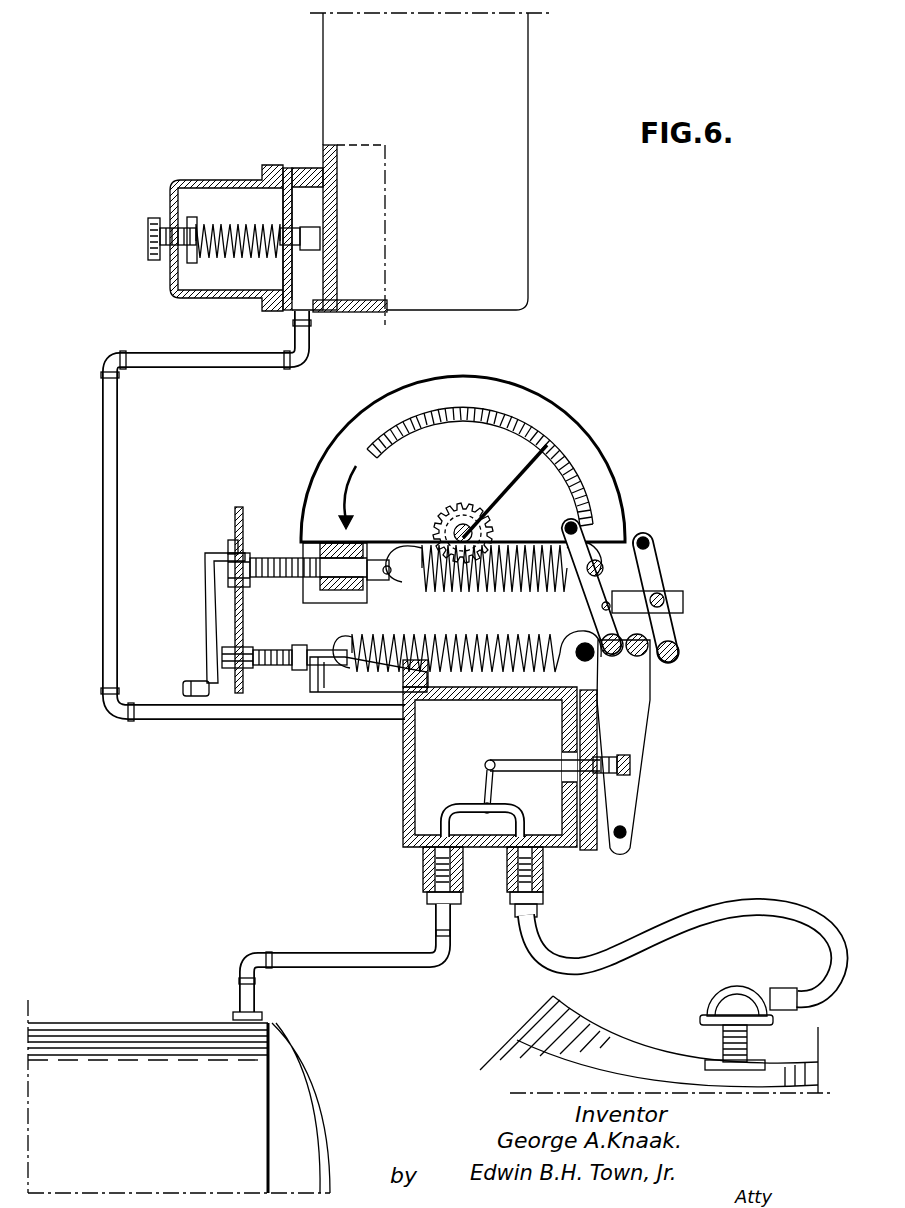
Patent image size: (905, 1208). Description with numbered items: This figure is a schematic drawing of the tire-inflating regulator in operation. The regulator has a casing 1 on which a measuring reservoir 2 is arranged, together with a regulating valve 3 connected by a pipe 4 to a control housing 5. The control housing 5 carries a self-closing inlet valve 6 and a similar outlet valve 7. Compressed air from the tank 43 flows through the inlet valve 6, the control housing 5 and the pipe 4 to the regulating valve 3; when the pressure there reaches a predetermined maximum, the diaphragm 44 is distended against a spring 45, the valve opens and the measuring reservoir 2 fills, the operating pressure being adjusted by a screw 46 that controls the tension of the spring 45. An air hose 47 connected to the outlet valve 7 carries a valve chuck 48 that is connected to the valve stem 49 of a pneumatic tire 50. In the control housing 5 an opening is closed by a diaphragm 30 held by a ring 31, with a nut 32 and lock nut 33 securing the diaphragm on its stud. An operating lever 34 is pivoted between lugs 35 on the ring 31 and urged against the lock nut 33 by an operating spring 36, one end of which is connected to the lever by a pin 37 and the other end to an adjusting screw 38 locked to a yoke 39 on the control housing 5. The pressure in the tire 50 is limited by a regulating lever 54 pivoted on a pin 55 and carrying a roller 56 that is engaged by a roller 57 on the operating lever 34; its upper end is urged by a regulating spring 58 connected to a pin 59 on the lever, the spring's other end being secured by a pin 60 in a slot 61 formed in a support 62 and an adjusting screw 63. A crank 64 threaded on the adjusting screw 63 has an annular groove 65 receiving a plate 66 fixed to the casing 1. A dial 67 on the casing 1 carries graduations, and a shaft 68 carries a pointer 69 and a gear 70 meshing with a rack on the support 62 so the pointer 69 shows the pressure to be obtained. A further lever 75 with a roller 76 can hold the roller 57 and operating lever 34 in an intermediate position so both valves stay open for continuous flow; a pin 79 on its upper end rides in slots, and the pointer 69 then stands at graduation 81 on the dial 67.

The casing 1 is at (237, 510).
The measuring reservoir 2 is at (530, 247).
The regulating valve 3 is at (170, 192).
The pipe 4 is at (100, 447).
The control housing 5 is at (403, 758).
The inlet valve 6 is at (423, 870).
The outlet valve 7 is at (545, 880).
The diaphragm 30 is at (578, 745).
The ring 31 is at (598, 703).
The nut 32 is at (614, 778).
The lock nut 33 is at (612, 760).
The operating lever 34 is at (640, 678).
The lugs 35 is at (612, 850).
The operating spring 36 is at (482, 624).
The pin 37 is at (576, 640).
The adjusting screw 38 is at (272, 663).
The yoke 39 is at (332, 692).
The tank 43 is at (109, 1023).
The diaphragm 44 is at (289, 205).
The spring 45 is at (250, 258).
The screw 46 is at (150, 238).
The air hose 47 is at (742, 902).
The valve chuck 48 is at (737, 988).
The valve stem 49 is at (723, 1042).
The pneumatic tire 50 is at (517, 1040).
The regulating lever 54 is at (615, 592).
The pin 55 is at (612, 608).
The roller 56 is at (614, 655).
The roller 57 is at (646, 652).
The regulating spring 58 is at (515, 542).
The pin 59 is at (600, 565).
The pin 60 is at (390, 580).
The slot 61 is at (382, 592).
The support 62 is at (338, 598).
The adjusting screw 63 is at (315, 567).
The crank 64 is at (207, 603).
The annular groove 65 is at (228, 568).
The plate 66 is at (232, 546).
The dial 67 is at (567, 410).
The shaft 68 is at (455, 528).
The pointer 69 is at (522, 478).
The gear 70 is at (470, 505).
The lever 75 is at (660, 577).
The roller 76 is at (681, 652).
The pin 79 is at (648, 545).
The graduation 81 is at (340, 527).